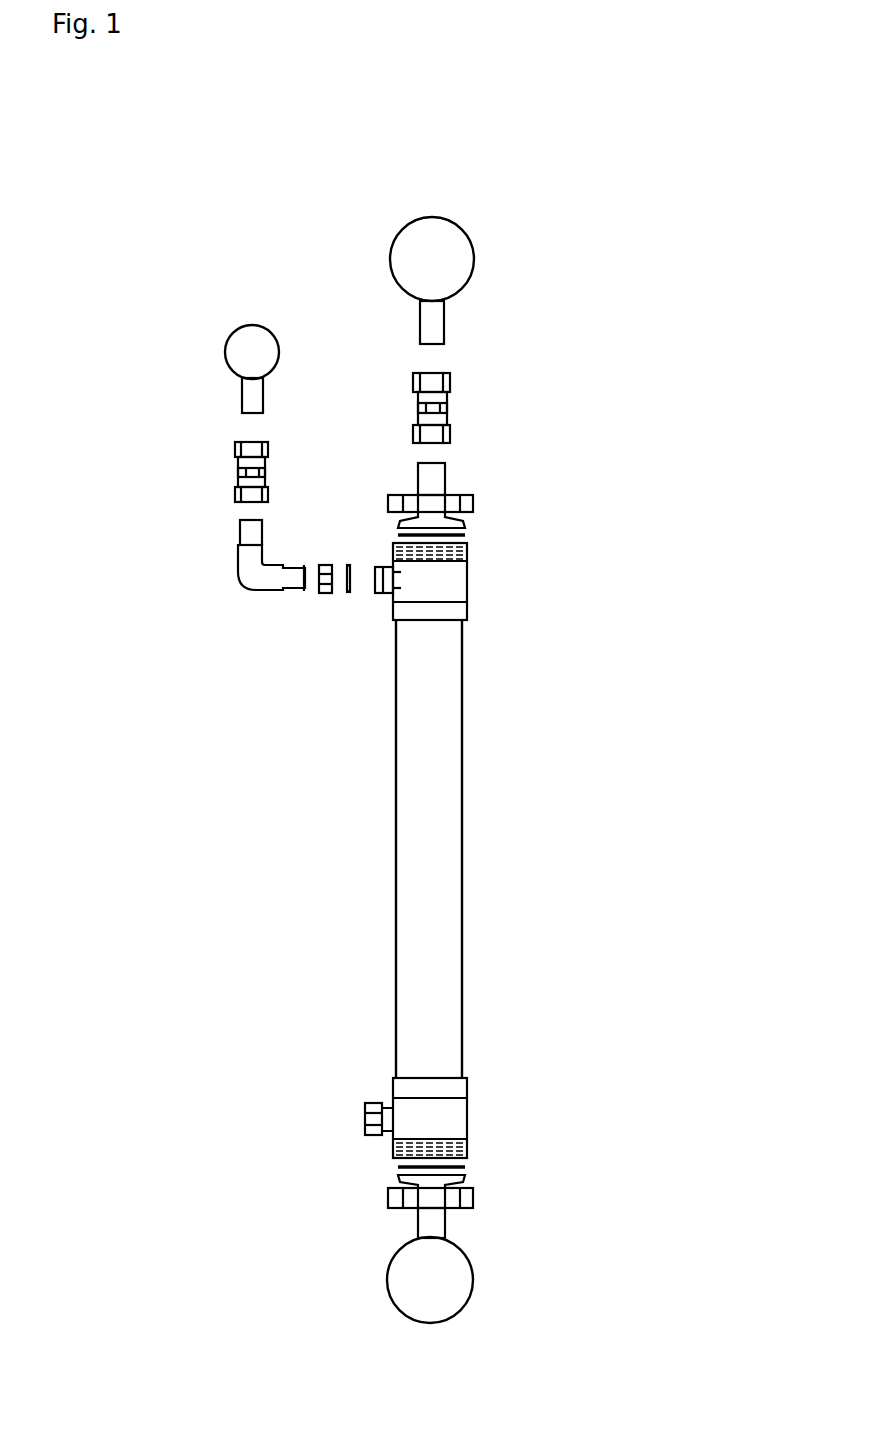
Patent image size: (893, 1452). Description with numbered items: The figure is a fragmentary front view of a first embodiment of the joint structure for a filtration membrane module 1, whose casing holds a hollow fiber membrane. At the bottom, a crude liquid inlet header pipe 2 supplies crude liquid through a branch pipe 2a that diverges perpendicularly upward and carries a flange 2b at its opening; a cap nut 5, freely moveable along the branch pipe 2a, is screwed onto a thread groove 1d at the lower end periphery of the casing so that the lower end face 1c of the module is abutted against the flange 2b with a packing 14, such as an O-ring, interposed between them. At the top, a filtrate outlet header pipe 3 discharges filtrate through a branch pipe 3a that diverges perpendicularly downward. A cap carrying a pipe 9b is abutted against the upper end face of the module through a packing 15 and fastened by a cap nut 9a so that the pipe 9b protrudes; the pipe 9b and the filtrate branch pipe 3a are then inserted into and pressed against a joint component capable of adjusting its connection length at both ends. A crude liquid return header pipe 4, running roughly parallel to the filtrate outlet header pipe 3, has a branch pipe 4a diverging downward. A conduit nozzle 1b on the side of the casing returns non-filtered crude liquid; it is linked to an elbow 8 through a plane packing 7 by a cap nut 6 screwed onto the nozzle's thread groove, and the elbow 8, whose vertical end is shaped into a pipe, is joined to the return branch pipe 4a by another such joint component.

The filtration membrane module 1 is at (465, 877).
The conduit nozzle 1b is at (379, 598).
The lower end face 1c is at (465, 1160).
The thread groove 1d is at (391, 1149).
The crude liquid inlet header pipe 2 is at (385, 1299).
The branch pipe 2a is at (416, 1229).
The flange 2b is at (394, 1178).
The filtrate outlet header pipe 3 is at (476, 246).
The branch pipe 3a is at (449, 328).
The crude liquid return header pipe 4 is at (235, 325).
The branch pipe 4a is at (266, 406).
The cap nut 5 is at (474, 1197).
The cap nut 6 is at (325, 598).
The plane packing 7 is at (348, 561).
The elbow 8 is at (245, 589).
The cap nut 9a is at (474, 503).
The pipe 9b is at (449, 477).
The packing 14 is at (392, 1167).
The packing 15 is at (467, 535).